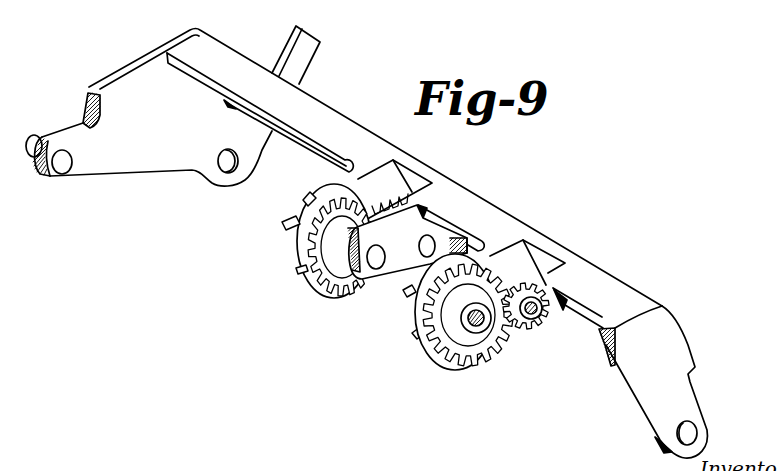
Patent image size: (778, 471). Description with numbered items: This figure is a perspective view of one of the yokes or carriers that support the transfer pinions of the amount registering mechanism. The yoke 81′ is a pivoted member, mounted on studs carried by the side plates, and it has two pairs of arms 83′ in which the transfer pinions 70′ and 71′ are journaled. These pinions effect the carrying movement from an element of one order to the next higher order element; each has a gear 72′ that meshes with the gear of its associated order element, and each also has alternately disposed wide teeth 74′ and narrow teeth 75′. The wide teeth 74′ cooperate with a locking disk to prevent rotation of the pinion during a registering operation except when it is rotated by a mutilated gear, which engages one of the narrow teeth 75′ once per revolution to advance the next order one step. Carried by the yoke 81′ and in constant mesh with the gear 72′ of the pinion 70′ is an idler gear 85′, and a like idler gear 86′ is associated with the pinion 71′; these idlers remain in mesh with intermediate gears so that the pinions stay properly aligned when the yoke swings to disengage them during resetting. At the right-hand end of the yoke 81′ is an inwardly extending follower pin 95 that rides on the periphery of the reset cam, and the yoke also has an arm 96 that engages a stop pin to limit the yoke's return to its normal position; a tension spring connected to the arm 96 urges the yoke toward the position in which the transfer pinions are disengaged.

The follower pin 95 is at (37, 135).
The arm 96 is at (307, 47).
The yoke 81′ is at (312, 100).
The arms 83′ is at (349, 163).
The idler gear 85′ is at (391, 191).
The idler gear 86′ is at (531, 274).
The transfer pinion 70′ is at (310, 285).
The transfer pinion 71′ is at (440, 367).
The gear 72′ is at (340, 279).
The wide teeth 74′ is at (283, 225).
The narrow teeth 75′ is at (306, 196).